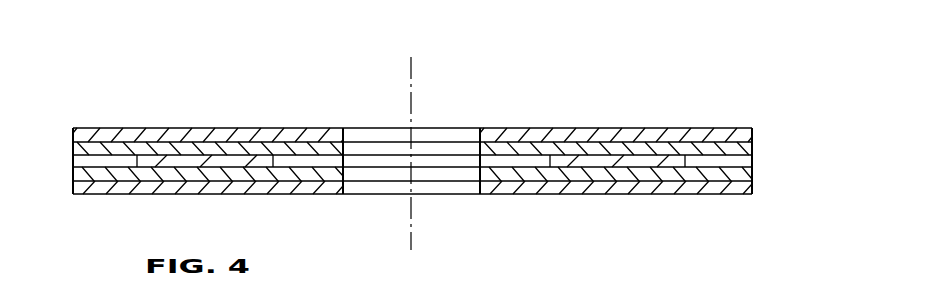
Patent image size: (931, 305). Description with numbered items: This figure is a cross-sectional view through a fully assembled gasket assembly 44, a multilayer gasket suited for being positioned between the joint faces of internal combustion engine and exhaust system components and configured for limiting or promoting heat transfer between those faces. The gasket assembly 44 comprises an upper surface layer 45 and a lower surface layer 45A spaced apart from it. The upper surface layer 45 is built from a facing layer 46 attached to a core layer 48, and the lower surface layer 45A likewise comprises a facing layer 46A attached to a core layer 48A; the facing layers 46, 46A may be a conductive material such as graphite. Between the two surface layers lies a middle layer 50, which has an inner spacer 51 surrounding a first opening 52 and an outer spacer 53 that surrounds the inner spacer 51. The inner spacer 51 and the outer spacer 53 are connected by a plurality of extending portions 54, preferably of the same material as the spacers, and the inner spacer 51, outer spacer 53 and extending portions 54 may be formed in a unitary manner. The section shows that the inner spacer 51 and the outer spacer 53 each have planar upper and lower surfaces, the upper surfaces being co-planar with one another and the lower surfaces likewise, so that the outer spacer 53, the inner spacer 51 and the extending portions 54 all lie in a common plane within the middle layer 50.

The gasket assembly 44 is at (126, 113).
The upper surface layer 45 is at (632, 138).
The lower surface layer 45A is at (628, 184).
The facing layer 46 is at (753, 134).
The facing layer 46A is at (752, 188).
The core layer 48 is at (753, 148).
The core layer 48A is at (753, 166).
The middle layer 50 is at (752, 160).
The inner spacer 51 is at (345, 161).
The first opening 52 is at (383, 162).
The outer spacer 53 is at (80, 162).
The extending portions 54 is at (209, 160).